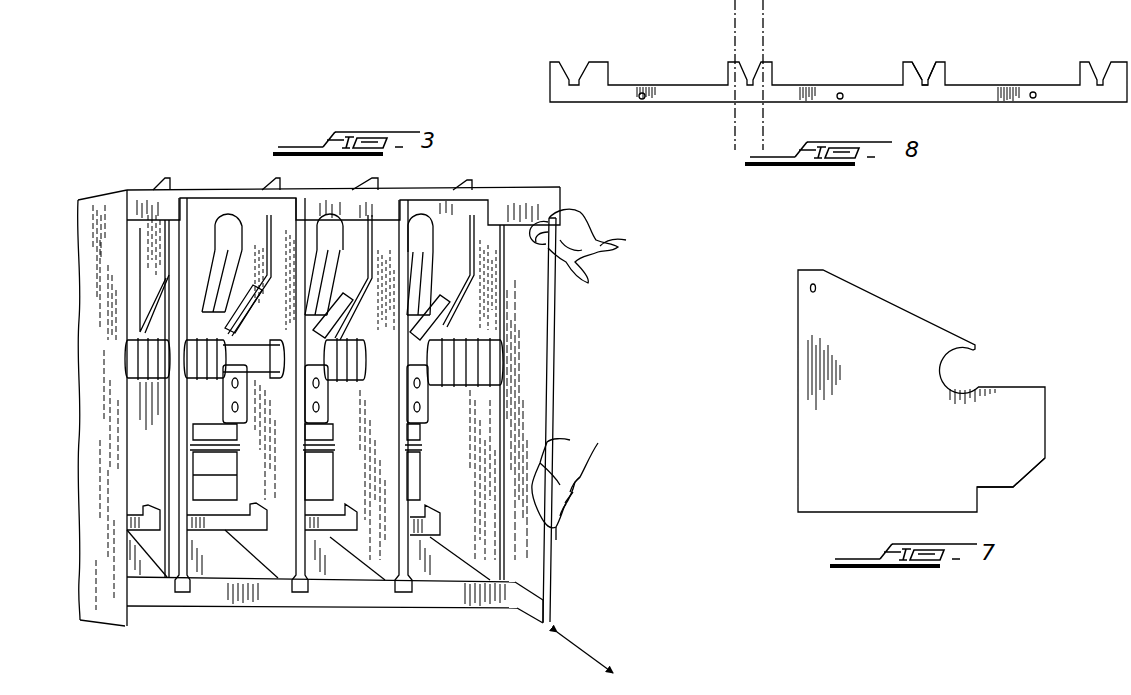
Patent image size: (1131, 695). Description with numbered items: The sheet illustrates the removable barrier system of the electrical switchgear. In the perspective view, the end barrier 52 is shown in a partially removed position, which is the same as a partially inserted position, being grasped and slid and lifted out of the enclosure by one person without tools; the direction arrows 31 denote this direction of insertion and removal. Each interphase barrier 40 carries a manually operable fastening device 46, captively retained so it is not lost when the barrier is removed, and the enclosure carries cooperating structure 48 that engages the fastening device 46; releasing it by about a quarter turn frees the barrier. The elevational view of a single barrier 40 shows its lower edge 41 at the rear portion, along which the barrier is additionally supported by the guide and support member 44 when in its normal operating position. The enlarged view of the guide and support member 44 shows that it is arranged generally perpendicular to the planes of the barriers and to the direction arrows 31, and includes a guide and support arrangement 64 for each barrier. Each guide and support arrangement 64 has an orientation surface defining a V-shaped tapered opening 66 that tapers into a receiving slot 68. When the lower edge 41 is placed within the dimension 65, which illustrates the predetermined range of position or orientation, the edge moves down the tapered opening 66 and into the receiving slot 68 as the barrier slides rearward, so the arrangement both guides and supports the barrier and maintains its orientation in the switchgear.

In FIG. 3, the direction arrows 31 is at (583, 643).
In FIG. 3, the interphase barrier 40 is at (278, 540).
In FIG. 7, the interphase barrier 40 is at (933, 287).
In FIG. 7, the lower edge 41 is at (999, 488).
In FIG. 3, the guide and support member 44 is at (357, 537).
In FIG. 8, the guide and support member 44 is at (1110, 104).
In FIG. 3, the fastening device 46 is at (292, 216).
In FIG. 7, the fastening device 46 is at (824, 287).
In FIG. 3, the cooperating structure 48 is at (317, 217).
In FIG. 3, the end barrier 52 is at (555, 315).
In FIG. 8, the guide and support arrangement 64 is at (930, 48).
In FIG. 8, the dimension 65 is at (716, 15).
In FIG. 8, the tapered opening 66 is at (930, 67).
In FIG. 8, the receiving slot 68 is at (926, 83).